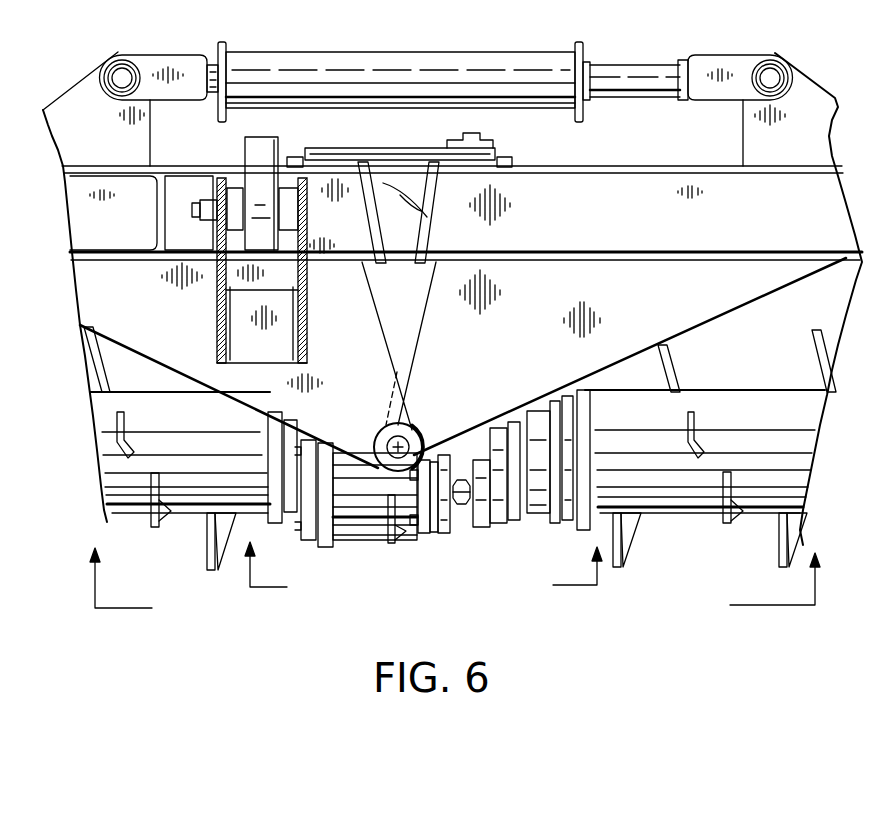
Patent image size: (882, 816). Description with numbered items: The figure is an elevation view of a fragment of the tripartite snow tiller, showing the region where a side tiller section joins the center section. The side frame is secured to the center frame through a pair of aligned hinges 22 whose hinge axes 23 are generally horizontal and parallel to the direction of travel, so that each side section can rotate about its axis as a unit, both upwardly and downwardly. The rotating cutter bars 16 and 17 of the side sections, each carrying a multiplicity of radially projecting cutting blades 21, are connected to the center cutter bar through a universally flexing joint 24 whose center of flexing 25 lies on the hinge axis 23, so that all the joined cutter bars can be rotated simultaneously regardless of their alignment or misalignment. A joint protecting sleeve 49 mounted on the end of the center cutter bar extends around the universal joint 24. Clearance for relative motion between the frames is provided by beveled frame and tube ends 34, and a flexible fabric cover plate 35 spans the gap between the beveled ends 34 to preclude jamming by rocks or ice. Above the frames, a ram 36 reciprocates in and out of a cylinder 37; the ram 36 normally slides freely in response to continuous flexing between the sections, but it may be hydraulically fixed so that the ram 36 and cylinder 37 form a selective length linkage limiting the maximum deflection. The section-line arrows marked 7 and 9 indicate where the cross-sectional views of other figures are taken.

The cylinder 37 is at (415, 55).
The ram 36 is at (628, 70).
The flexible fabric cover plate 35 is at (337, 148).
The beveled frame and tube ends 34 is at (385, 192).
The hinge 22 is at (400, 418).
The hinge axis 23 is at (417, 447).
The center of flexing 25 is at (502, 427).
The universally flexing joint 24 is at (450, 500).
The joint protecting sleeve 49 is at (378, 537).
The cutter bar 17 is at (185, 492).
The cutter bar 16 is at (702, 487).
The cutting blade 21 is at (205, 547).
The section line 7- 7 is at (453, 578).
The section line 9- 9 is at (423, 564).